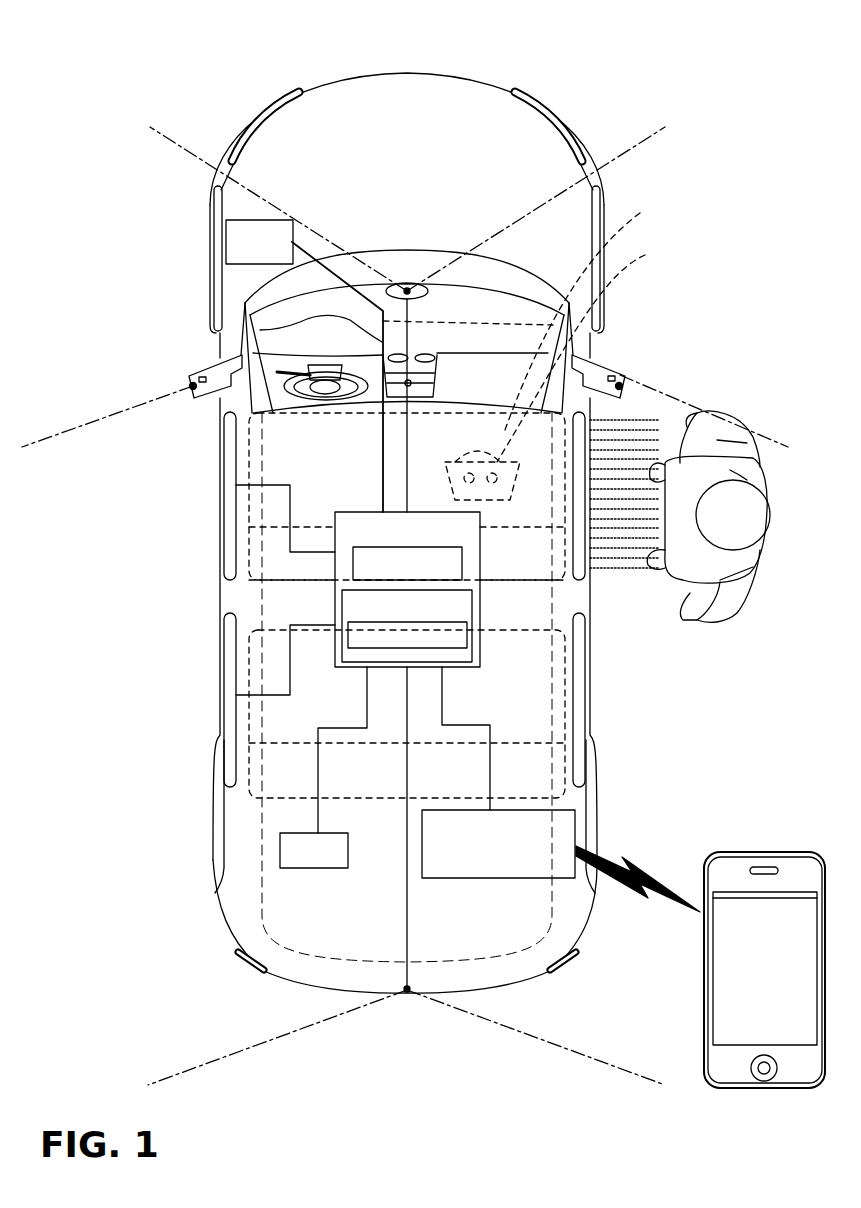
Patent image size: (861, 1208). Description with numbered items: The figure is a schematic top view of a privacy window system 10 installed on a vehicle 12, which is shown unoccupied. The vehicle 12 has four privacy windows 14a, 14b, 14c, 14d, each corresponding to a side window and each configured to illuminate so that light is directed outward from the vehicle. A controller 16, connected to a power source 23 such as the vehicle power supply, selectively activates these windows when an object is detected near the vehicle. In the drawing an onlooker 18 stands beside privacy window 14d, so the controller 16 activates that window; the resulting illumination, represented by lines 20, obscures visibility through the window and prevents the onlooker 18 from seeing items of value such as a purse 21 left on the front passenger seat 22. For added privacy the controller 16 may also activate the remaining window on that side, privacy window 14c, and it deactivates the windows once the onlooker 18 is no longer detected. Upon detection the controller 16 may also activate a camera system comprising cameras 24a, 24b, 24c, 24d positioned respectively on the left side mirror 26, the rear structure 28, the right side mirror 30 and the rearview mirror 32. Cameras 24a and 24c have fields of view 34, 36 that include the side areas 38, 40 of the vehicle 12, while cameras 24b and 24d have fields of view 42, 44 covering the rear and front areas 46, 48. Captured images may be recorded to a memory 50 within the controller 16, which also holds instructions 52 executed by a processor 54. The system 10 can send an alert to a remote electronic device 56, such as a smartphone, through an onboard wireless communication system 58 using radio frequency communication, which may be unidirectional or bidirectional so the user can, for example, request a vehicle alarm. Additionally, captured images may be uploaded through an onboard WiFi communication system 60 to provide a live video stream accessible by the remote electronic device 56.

The privacy window system 10 is at (683, 90).
The vehicle 12 is at (494, 76).
The privacy window 14a is at (228, 453).
The privacy window 14b is at (226, 712).
The privacy window 14c is at (587, 712).
The privacy window 14d is at (587, 428).
The controller 16 is at (360, 512).
The onlooker 18 is at (753, 563).
The lines 20 is at (630, 570).
The purse 21 is at (587, 352).
The front passenger seat 22 is at (584, 314).
The power source 23 is at (226, 242).
The camera 24a is at (186, 382).
The camera 24b is at (407, 994).
The camera 24c is at (624, 380).
The camera 24d is at (408, 283).
The left side mirror 26 is at (215, 362).
The rear structure 28 is at (513, 987).
The right side mirror 30 is at (604, 356).
The rearview mirror 32 is at (440, 286).
The field of view 34 is at (82, 432).
The field of view 36 is at (770, 440).
The side area 38 is at (114, 592).
The side area 40 is at (701, 675).
The field of view 42 is at (197, 1063).
The field of view 44 is at (197, 150).
The rear area 46 is at (408, 1102).
The front area 48 is at (398, 62).
The memory 50 is at (473, 604).
The instructions 52 is at (460, 648).
The processor 54 is at (353, 564).
The remote electronic device 56 is at (752, 852).
The wireless communication system 58 is at (553, 880).
The WiFi communication system 60 is at (280, 860).